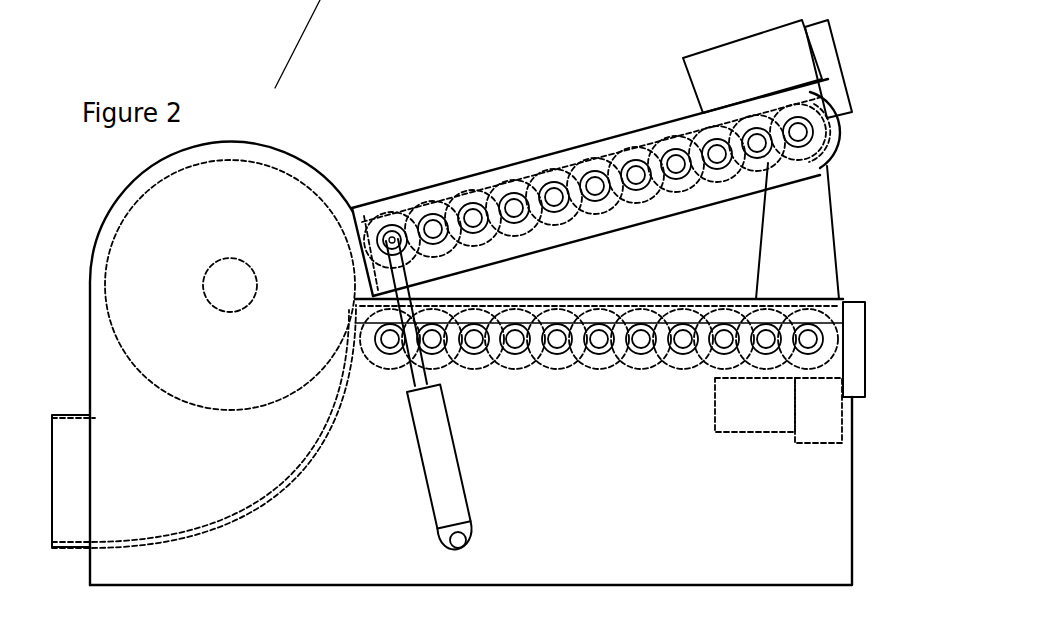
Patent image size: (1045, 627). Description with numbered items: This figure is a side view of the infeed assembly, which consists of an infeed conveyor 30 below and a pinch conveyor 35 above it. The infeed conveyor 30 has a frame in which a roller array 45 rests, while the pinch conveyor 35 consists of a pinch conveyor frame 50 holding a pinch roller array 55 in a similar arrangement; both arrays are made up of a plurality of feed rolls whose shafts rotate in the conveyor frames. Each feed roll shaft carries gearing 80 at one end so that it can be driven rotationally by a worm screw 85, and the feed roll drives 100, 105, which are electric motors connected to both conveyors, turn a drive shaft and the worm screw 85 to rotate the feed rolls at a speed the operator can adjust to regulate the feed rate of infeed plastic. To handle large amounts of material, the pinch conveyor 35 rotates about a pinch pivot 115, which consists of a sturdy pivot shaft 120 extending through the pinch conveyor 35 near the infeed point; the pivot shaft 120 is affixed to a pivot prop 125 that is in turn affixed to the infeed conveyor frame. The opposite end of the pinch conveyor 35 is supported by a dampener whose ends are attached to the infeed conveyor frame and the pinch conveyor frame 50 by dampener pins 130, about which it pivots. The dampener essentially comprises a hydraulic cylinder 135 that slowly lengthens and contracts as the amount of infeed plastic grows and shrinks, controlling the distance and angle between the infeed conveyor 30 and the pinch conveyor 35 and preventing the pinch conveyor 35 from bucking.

The infeed conveyor 30 is at (618, 298).
The pinch conveyor 35 is at (545, 148).
The roller array 45 is at (722, 364).
The pinch conveyor frame 50 is at (398, 198).
The pinch roller array 55 is at (497, 178).
The gearing 80 is at (737, 176).
The worm screw 85 is at (355, 308).
The feed roll drive 100 is at (752, 66).
The feed roll drive 105 is at (778, 410).
The pinch pivot 115 is at (826, 118).
The pivot shaft 120 is at (828, 100).
The pivot prop 125 is at (818, 252).
The dampener pins 130 is at (460, 536).
The hydraulic cylinder 135 is at (440, 467).